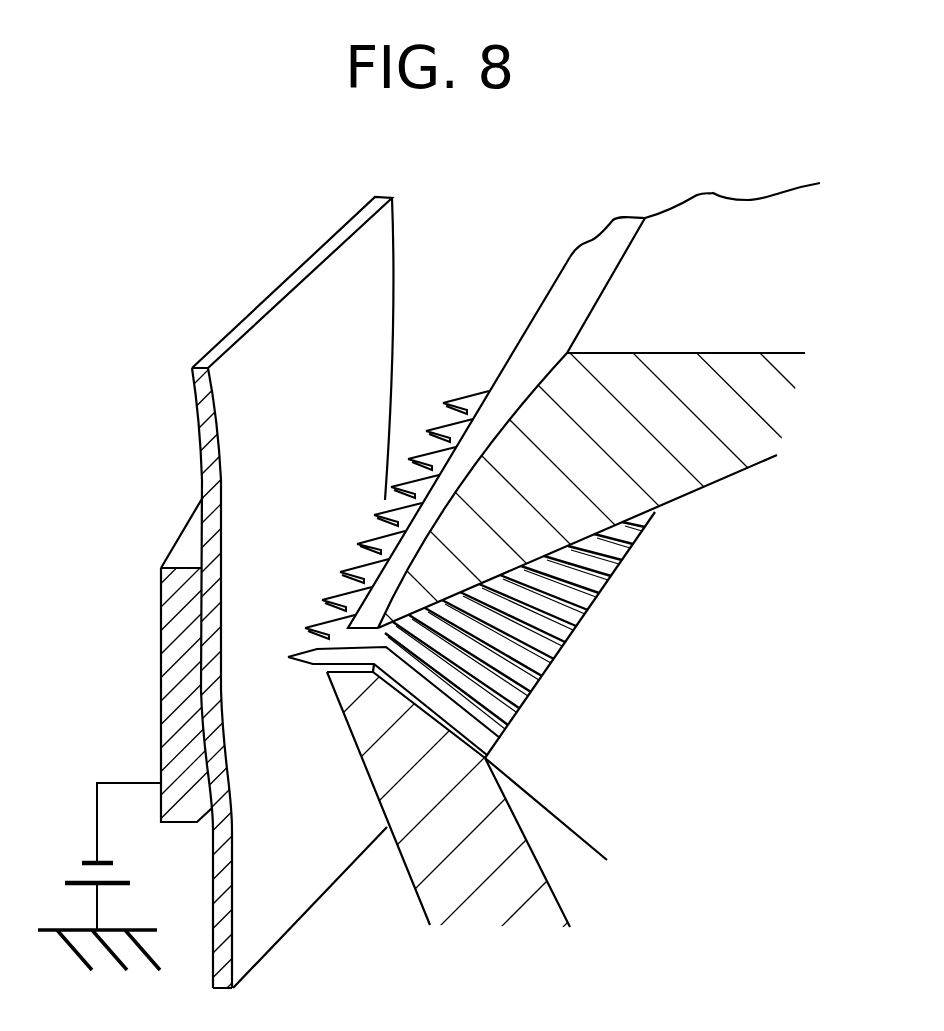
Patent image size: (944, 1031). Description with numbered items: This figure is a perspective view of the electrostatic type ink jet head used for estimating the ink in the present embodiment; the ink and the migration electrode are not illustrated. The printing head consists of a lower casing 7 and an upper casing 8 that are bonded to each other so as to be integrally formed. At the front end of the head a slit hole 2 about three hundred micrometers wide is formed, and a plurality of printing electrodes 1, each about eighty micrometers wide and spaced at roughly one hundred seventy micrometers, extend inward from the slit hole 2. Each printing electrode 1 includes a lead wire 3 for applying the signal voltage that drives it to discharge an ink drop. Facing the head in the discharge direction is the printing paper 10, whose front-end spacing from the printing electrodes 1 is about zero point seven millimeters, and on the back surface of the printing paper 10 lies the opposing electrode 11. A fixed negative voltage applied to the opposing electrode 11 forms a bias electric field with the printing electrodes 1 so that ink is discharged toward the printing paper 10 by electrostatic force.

The printing electrode 1 is at (455, 400).
The slit hole 2 is at (352, 668).
The lead wire 3 is at (527, 697).
The lower casing 7 is at (424, 793).
The upper casing 8 is at (663, 368).
The printing paper 10 is at (377, 257).
The opposing electrode 11 is at (172, 617).